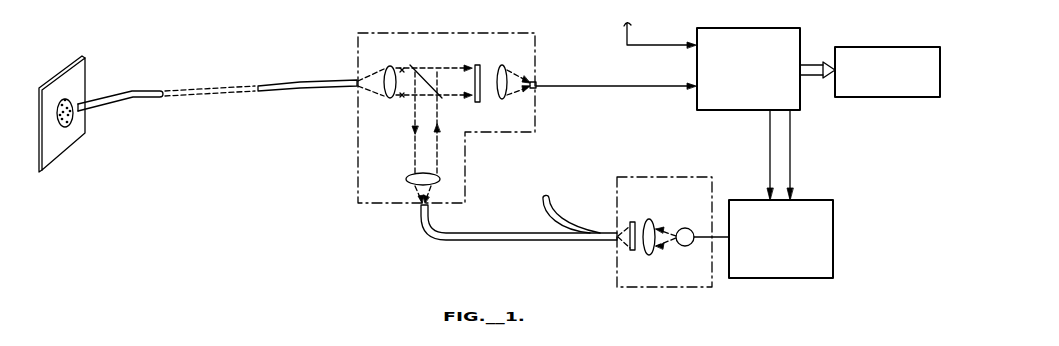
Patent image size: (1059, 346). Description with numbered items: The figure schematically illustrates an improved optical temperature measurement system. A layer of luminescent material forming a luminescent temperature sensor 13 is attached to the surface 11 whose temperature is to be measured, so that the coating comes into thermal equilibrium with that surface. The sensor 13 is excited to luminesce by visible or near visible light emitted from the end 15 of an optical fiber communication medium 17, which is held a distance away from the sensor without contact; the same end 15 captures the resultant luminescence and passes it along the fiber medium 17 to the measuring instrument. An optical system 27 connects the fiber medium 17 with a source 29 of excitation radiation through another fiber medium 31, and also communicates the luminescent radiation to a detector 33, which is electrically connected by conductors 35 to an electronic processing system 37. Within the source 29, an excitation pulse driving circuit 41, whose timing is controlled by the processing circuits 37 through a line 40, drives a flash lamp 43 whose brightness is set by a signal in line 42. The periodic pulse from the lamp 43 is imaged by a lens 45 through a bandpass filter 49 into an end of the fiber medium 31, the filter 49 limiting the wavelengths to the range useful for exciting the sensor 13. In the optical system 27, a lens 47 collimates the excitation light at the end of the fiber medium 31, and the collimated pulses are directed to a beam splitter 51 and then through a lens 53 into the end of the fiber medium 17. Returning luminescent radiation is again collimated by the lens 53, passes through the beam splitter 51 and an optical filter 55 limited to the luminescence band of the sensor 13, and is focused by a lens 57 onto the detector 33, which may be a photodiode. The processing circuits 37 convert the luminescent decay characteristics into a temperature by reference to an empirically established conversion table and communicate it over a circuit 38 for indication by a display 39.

The surface 11 is at (80, 77).
The luminescent temperature sensor 13 is at (68, 118).
The end of optical fiber communication medium 15 is at (79, 105).
The optical fiber communication medium 17 is at (135, 92).
The optical system 27 is at (504, 32).
The source of excitation radiation 29 is at (686, 175).
The optical fiber transmission medium 31 is at (486, 241).
The detector 33 is at (536, 81).
The conductors 35 is at (578, 85).
The electronic processing system 37 is at (760, 28).
The circuit 38 is at (806, 63).
The display 39 is at (906, 47).
The line 40 is at (769, 148).
The excitation pulse driving circuit 41 is at (821, 200).
The line 42 is at (792, 147).
The flash lamp 43 is at (687, 228).
The lens 45 is at (650, 220).
The lens 47 is at (431, 178).
The bandpass filter 49 is at (632, 222).
The beam splitter 51 is at (413, 65).
The lens 53 is at (389, 66).
The optical filter 55 is at (477, 65).
The lens 57 is at (503, 67).